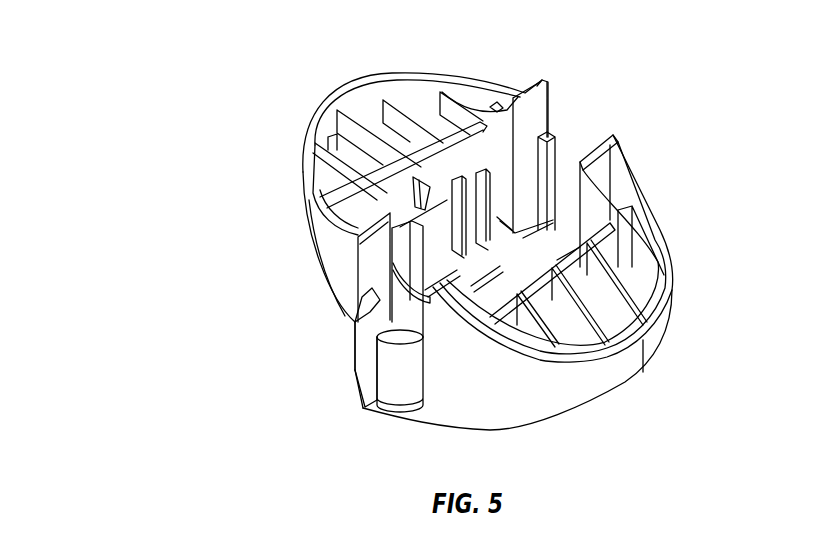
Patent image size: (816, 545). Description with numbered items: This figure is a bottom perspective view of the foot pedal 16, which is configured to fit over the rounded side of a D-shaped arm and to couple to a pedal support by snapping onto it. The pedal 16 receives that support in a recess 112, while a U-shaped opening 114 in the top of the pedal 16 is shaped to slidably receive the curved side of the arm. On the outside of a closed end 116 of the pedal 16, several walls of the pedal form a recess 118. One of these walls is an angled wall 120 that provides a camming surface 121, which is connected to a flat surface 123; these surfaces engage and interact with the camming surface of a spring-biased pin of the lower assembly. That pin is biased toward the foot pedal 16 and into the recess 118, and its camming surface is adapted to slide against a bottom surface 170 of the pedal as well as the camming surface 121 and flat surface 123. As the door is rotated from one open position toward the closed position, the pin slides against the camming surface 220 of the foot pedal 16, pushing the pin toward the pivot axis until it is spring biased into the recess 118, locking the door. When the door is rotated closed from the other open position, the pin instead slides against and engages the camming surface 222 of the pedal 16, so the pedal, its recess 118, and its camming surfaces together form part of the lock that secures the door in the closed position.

The foot pedal 16 is at (670, 260).
The recess 112 is at (495, 141).
The U-shaped opening 114 is at (545, 267).
The closed end 116 is at (330, 308).
The recess 118 is at (352, 351).
The angled wall 120 is at (363, 385).
The camming surface 121 is at (358, 363).
The flat surface 123 is at (368, 387).
The bottom surface 170 is at (377, 325).
The camming surface 220 is at (407, 385).
The camming surface 222 is at (352, 337).